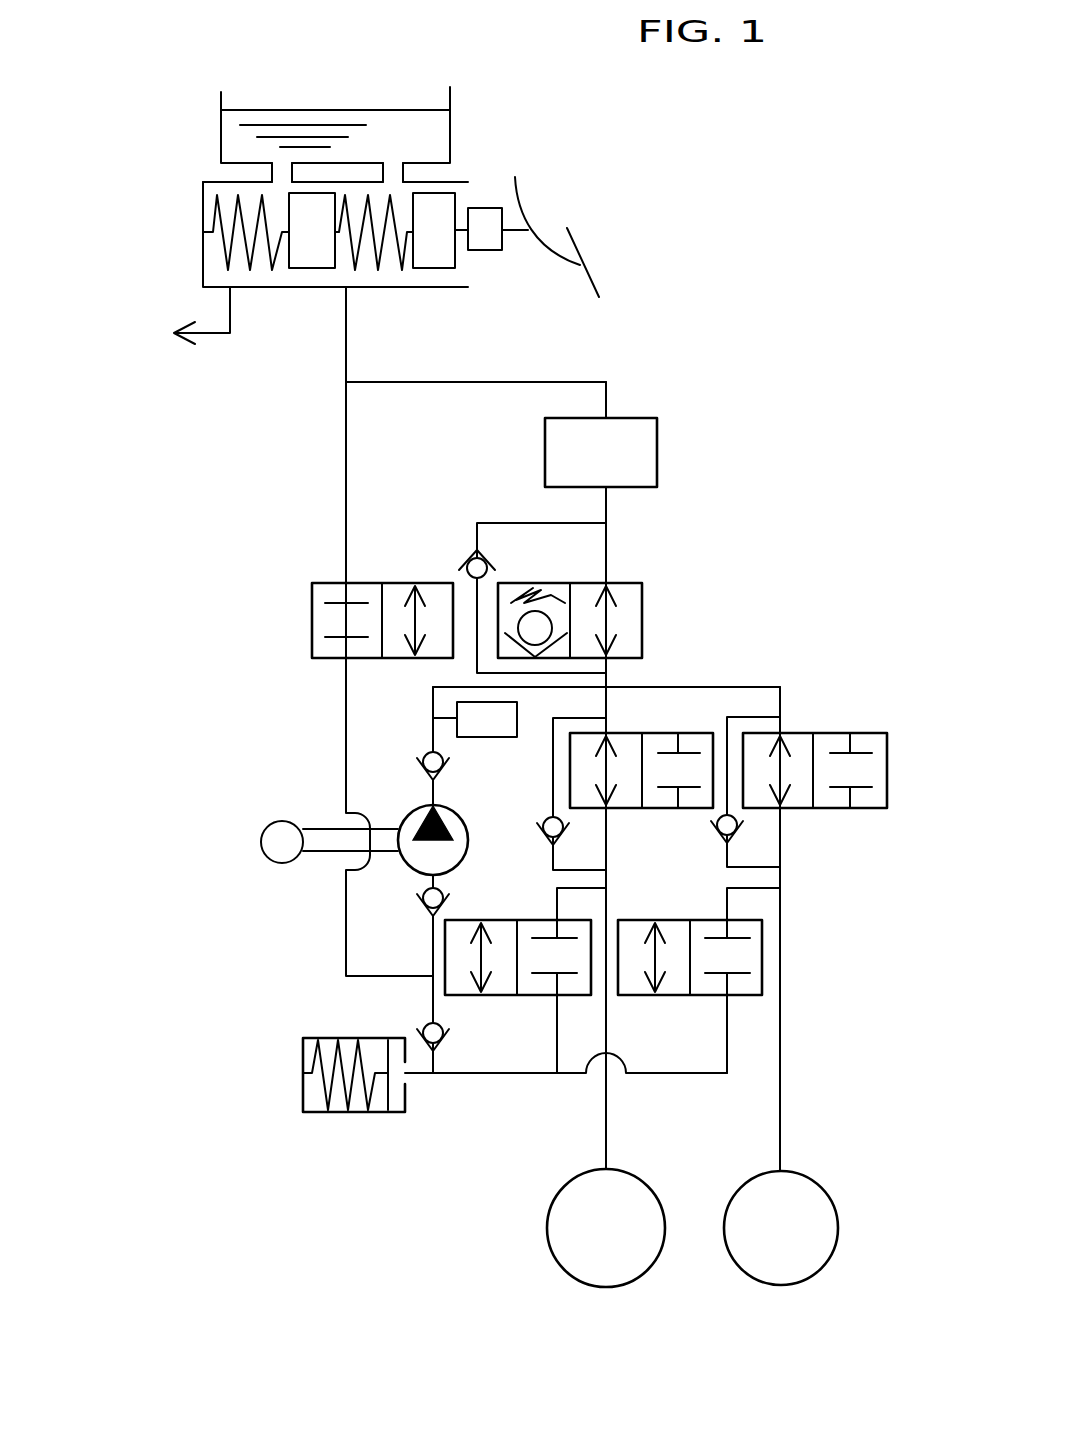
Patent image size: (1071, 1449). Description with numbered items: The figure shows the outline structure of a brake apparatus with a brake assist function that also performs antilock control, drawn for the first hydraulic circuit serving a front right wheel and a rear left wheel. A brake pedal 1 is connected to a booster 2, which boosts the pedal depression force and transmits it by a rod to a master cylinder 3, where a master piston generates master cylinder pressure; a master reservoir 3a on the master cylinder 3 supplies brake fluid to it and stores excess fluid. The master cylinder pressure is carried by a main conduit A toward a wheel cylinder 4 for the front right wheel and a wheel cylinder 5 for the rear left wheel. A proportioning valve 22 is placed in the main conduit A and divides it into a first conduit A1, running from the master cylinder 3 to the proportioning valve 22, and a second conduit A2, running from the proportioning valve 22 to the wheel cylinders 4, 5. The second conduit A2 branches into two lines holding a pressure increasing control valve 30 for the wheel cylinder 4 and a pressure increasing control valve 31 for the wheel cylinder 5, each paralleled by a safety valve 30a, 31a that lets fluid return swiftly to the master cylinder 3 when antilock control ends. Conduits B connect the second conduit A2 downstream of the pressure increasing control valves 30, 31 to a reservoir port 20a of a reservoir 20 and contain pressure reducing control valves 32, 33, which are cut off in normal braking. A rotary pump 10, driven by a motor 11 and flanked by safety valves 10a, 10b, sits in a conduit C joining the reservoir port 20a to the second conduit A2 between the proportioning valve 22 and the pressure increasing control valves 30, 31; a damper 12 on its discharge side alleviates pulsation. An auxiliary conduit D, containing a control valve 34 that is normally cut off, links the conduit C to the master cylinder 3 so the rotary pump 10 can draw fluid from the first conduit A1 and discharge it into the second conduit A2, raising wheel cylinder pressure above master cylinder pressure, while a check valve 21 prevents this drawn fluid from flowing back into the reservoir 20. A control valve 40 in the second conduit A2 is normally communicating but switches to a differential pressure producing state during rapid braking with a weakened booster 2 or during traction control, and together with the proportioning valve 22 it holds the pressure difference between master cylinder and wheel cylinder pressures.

The brake pedal 1 is at (572, 240).
The booster 2 is at (487, 251).
The master cylinder 3 is at (200, 204).
The master reservoir 3a is at (268, 118).
The wheel cylinder 4 is at (553, 1248).
The wheel cylinder 5 is at (730, 1258).
The rotary pump 10 is at (410, 812).
The safety valve 10a is at (427, 910).
The safety valve 10b is at (418, 762).
The motor 11 is at (262, 830).
The damper 12 is at (487, 742).
The reservoir 20 is at (303, 1100).
The reservoir port 20a is at (403, 1073).
The check valve 21 is at (465, 1058).
The proportioning valve 22 is at (657, 447).
The pressure increasing control valve 30 is at (687, 733).
The safety valve 30a is at (542, 838).
The pressure increasing control valve 31 is at (843, 808).
The safety valve 31a is at (718, 832).
The pressure reducing control valve 32 is at (528, 920).
The pressure reducing control valve 33 is at (763, 942).
The control valve 34 is at (312, 622).
The control valve 40 is at (645, 607).
The main conduit A is at (340, 356).
The first conduit A1 is at (575, 381).
The second conduit A2 is at (780, 698).
The conduits B is at (558, 1040).
The conduit C is at (432, 698).
The auxiliary conduit D is at (345, 512).